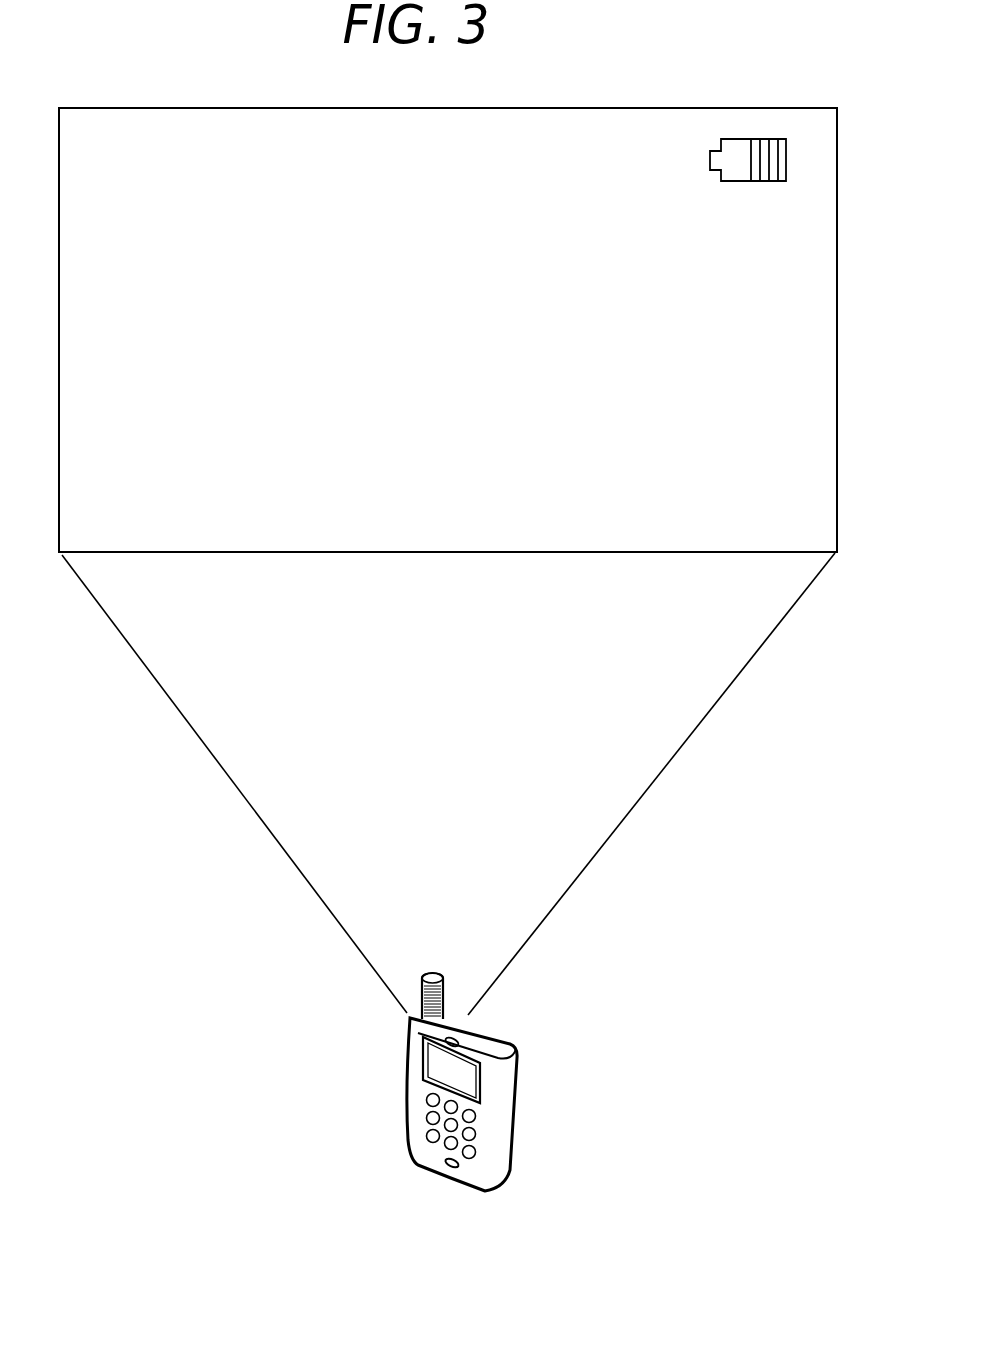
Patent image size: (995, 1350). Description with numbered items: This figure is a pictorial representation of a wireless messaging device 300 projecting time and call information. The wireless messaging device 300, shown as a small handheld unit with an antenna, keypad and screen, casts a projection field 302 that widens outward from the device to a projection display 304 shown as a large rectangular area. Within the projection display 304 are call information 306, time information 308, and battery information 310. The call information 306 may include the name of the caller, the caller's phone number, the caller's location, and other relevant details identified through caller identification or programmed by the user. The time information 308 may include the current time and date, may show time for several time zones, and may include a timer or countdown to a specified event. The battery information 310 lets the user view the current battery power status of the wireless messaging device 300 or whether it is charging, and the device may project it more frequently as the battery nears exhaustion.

The wireless messaging device 300 is at (505, 1123).
The projection field 302 is at (315, 888).
The projection display 304 is at (122, 522).
The call information 306 is at (563, 360).
The time information 308 is at (334, 237).
The battery information 310 is at (730, 168).